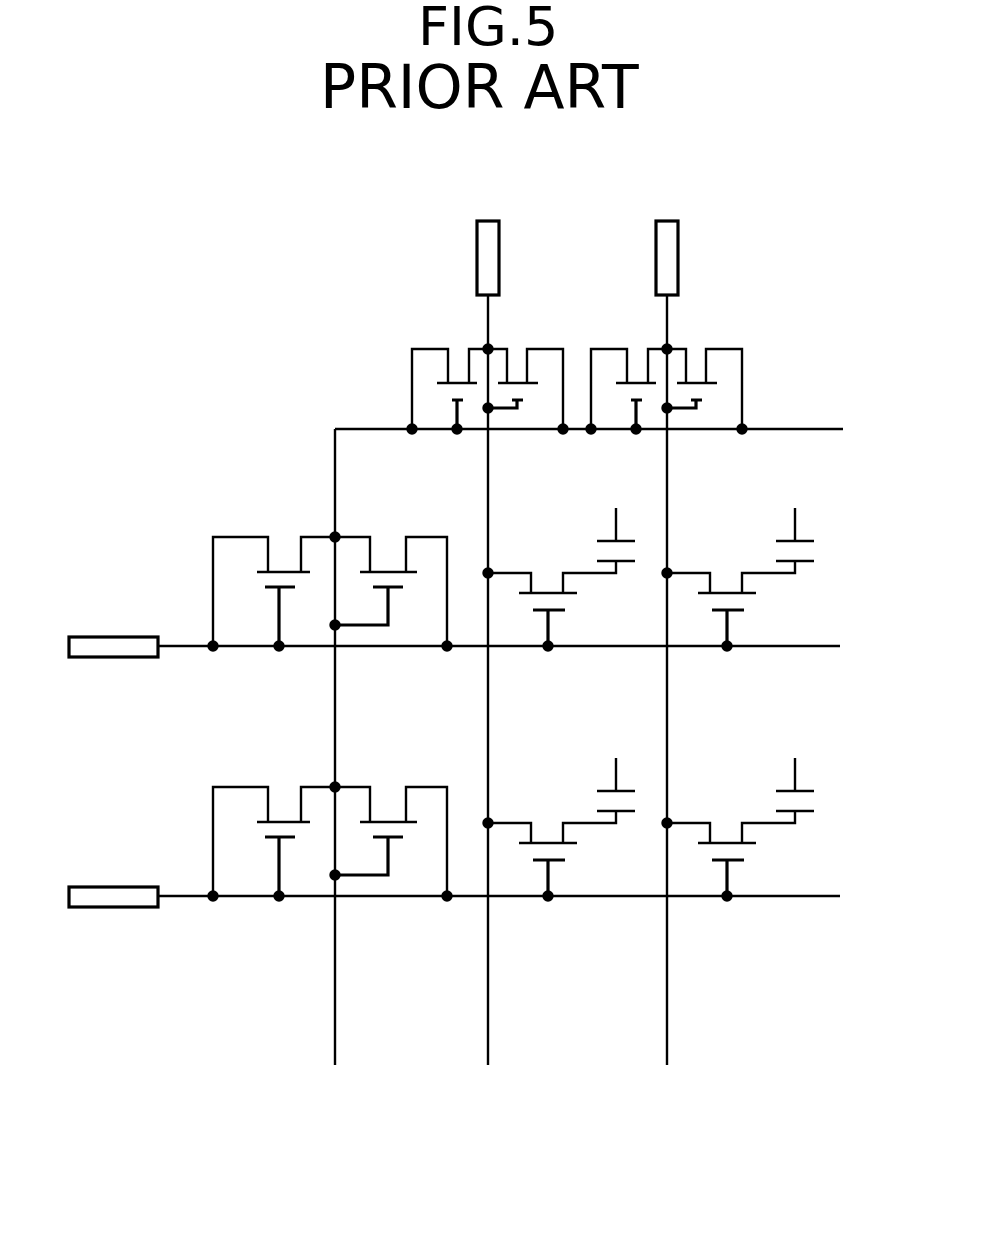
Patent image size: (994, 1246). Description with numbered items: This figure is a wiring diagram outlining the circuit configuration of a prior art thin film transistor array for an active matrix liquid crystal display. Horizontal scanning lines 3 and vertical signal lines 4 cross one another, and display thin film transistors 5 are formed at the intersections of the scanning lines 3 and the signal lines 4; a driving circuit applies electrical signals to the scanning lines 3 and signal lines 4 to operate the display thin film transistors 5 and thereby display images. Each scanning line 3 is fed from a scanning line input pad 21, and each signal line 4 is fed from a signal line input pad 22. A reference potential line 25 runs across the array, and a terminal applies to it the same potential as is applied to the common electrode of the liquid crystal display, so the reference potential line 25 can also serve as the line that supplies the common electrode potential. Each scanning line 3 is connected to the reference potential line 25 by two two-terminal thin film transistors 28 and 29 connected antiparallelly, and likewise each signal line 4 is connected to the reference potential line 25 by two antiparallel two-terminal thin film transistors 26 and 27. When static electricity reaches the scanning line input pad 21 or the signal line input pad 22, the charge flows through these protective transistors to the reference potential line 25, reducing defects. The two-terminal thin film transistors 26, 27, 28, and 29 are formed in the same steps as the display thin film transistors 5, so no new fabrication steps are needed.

The scanning line 3 is at (190, 643).
The signal line 4 is at (486, 316).
The display thin film transistor 5 is at (806, 611).
The scanning line input pad 21 is at (110, 643).
The signal line input pad 22 is at (482, 247).
The reference potential line 25 is at (800, 429).
The two-terminal thin film transistor 26 is at (626, 335).
The two-terminal thin film transistor 27 is at (601, 328).
The two-terminal thin film transistor 28 is at (376, 526).
The two-terminal thin film transistor 29 is at (268, 525).